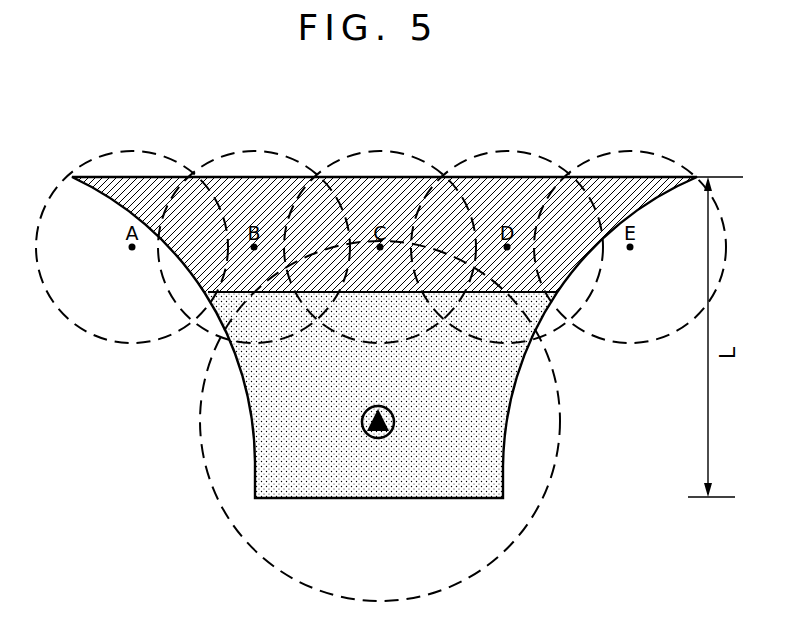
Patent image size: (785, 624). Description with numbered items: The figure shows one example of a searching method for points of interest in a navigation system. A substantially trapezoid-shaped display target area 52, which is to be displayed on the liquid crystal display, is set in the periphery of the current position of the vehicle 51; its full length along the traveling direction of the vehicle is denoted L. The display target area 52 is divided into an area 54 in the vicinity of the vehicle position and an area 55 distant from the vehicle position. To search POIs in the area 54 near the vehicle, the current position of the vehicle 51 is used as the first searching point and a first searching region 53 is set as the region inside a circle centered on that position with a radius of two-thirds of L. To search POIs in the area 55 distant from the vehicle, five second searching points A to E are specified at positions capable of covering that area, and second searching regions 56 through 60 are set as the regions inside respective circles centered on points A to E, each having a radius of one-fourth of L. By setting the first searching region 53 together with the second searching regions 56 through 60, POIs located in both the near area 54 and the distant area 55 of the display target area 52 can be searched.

The current position of the vehicle 51 is at (394, 420).
The display target area 52 is at (240, 398).
The first searching region 53 is at (197, 443).
The area in the vicinity of the vehicle position 54 is at (315, 488).
The area distant from the vehicle position 55 is at (246, 285).
The second searching region 56 is at (130, 152).
The second searching region 57 is at (252, 152).
The second searching region 58 is at (380, 152).
The second searching region 59 is at (508, 152).
The second searching region 60 is at (631, 152).